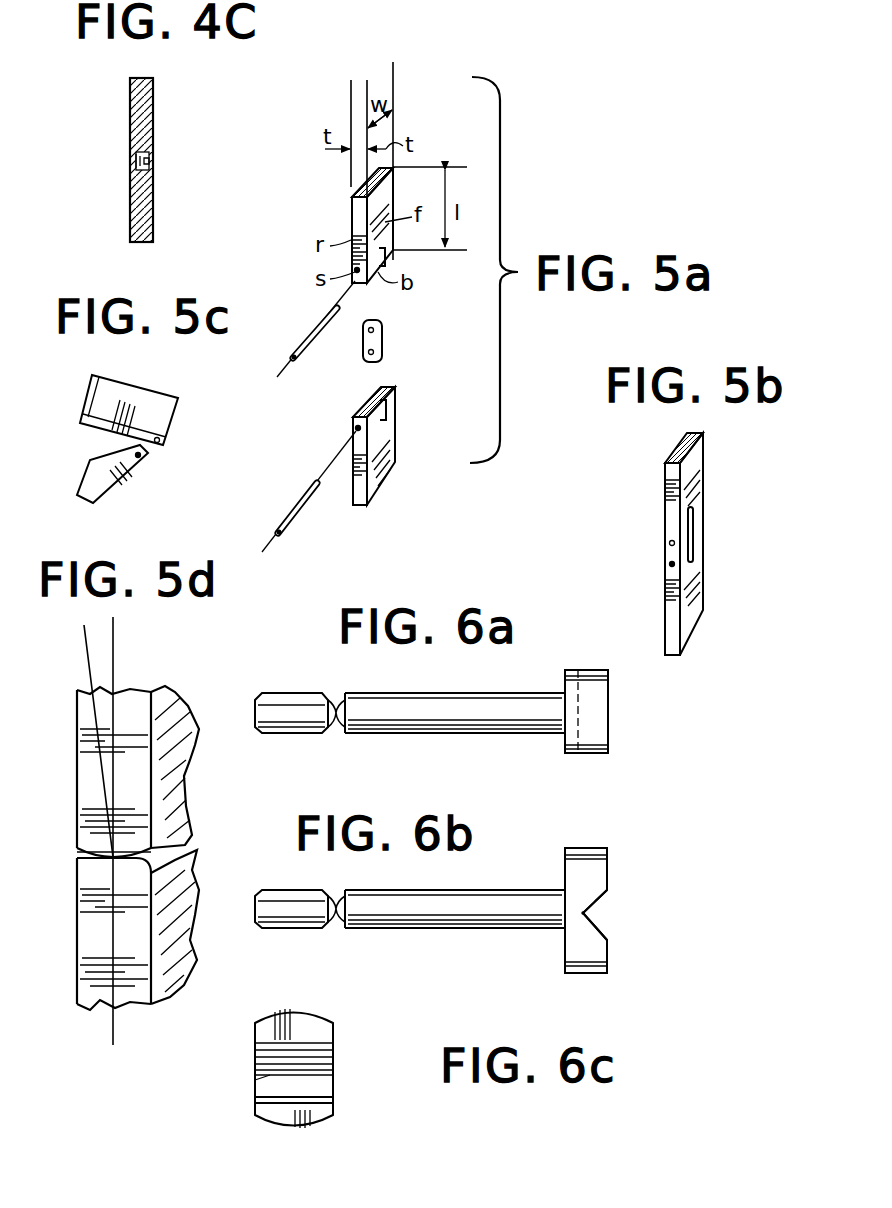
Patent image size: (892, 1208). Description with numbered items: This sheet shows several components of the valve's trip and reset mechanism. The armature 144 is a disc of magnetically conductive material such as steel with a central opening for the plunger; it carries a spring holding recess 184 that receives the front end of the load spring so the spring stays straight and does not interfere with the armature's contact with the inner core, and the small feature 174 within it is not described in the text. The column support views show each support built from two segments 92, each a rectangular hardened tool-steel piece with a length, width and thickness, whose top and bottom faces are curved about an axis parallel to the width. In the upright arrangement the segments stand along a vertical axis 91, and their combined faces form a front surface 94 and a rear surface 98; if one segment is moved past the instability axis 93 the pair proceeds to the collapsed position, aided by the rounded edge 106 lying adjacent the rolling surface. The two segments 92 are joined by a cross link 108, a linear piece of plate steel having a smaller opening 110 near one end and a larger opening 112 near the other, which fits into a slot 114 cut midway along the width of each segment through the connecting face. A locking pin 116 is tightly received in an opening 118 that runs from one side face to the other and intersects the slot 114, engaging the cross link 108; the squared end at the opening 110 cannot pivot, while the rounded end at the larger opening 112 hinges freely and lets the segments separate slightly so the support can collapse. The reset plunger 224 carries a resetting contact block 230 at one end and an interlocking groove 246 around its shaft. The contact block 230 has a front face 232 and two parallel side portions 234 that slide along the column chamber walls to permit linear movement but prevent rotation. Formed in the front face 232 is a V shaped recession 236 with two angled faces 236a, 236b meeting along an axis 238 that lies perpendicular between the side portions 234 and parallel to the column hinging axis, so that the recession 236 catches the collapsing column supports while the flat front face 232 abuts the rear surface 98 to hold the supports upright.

In FIG. 4C, the armature 144 is at (156, 112).
In FIG. 4C, the pin 174 is at (150, 165).
In FIG. 4C, the spring holding recess 184 is at (137, 158).
In FIG. 5d, the vertical axis 91 is at (115, 658).
In FIG. 5d, the instability axis 93 is at (86, 650).
In FIG. 5a, the segment 92 is at (357, 215).
In FIG. 5c, the segment 92 is at (110, 393).
In FIG. 5b, the segment 92 is at (668, 480).
In FIG. 5d, the segment 92 is at (85, 760).
In FIG. 5b, the front surface 94 is at (695, 490).
In FIG. 5b, the rear surface 98 is at (667, 512).
In FIG. 5d, the rounded edge 106 is at (80, 857).
In FIG. 5a, the cross link 108 is at (385, 342).
In FIG. 5c, the cross link 108 is at (172, 411).
In FIG. 5b, the cross link 108 is at (695, 540).
In FIG. 5a, the opening 110 is at (380, 358).
In FIG. 5a, the opening 112 is at (380, 322).
In FIG. 5a, the slot 114 is at (387, 258).
In FIG. 5a, the locking pin 116 is at (300, 341).
In FIG. 5c, the locking pin 116 is at (141, 458).
In FIG. 5b, the locking pin 116 is at (667, 566).
In FIG. 5a, the opening 118 is at (346, 297).
In FIG. 6a, the reset plunger 224 is at (290, 705).
In FIG. 6b, the reset plunger 224 is at (445, 910).
In FIG. 6a, the resetting contact block 230 is at (583, 687).
In FIG. 6b, the resetting contact block 230 is at (612, 855).
In FIG. 6a, the front face 232 is at (610, 718).
In FIG. 6b, the front face 232 is at (608, 968).
In FIG. 6c, the front face 232 is at (305, 1132).
In FIG. 6a, the side portion 234 is at (588, 672).
In FIG. 6b, the side portion 234 is at (580, 870).
In FIG. 6c, the side portion 234 is at (255, 1038).
In FIG. 6b, the V shaped recession 236 is at (600, 925).
In FIG. 6b, the angled face 236a is at (600, 895).
In FIG. 6b, the angled face 236b is at (605, 940).
In FIG. 6b, the axis 238 is at (596, 912).
In FIG. 6c, the axis 238 is at (272, 1077).
In FIG. 6a, the interlocking groove 246 is at (333, 715).
In FIG. 6b, the interlocking groove 246 is at (335, 918).